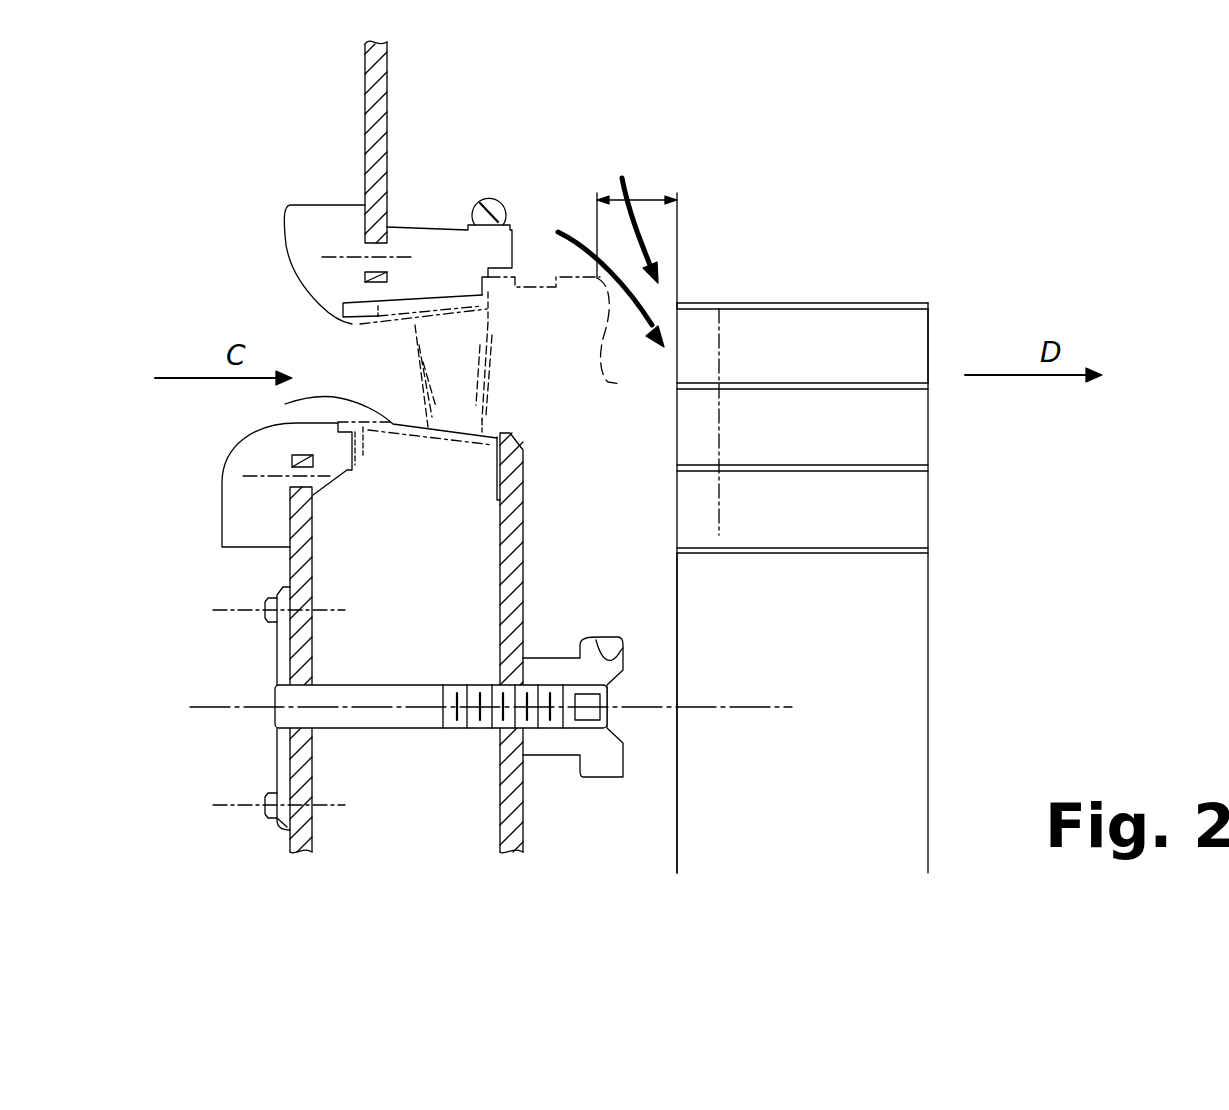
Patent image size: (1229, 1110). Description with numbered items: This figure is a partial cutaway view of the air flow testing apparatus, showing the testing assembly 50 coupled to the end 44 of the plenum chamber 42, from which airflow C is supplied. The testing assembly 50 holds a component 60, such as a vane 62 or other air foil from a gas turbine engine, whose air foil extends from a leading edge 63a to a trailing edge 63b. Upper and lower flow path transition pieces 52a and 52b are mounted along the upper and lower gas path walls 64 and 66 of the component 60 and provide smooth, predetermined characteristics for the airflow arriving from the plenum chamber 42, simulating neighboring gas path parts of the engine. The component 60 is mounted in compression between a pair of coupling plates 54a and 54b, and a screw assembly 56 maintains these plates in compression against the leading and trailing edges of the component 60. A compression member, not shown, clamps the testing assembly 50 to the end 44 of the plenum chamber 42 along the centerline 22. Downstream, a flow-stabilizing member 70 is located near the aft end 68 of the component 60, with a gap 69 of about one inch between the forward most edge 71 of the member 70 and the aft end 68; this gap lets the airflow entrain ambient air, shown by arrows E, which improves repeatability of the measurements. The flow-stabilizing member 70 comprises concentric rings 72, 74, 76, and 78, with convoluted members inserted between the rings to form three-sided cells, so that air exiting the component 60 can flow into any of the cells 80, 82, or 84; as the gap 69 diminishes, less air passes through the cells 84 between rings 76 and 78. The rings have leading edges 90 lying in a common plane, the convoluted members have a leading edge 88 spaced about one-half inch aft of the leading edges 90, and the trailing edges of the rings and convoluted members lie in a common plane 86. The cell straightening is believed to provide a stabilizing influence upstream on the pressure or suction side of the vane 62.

The centerline 22 is at (768, 707).
The plenum chamber 42 is at (115, 292).
The end of chamber 44 is at (388, 93).
The testing assembly 50 is at (422, 225).
The upper flow path transition piece 52a is at (287, 258).
The lower flow path transition piece 52b is at (222, 510).
The coupling plate 54a is at (313, 540).
The coupling plate 54b is at (500, 523).
The screw assembly 56 is at (598, 650).
The component 60 is at (543, 277).
The vane 62 is at (465, 407).
The leading edge 63a is at (418, 345).
The trailing edge 63b is at (488, 348).
The upper gas path wall 64 is at (393, 323).
The lower gas path wall 66 is at (290, 403).
The aft end 68 is at (620, 384).
The gap 69 is at (637, 200).
The flow-stabilizing member 70 is at (812, 300).
The forward most edge 71 is at (677, 303).
The concentric ring 72 is at (928, 303).
The concentric ring 74 is at (928, 386).
The concentric ring 76 is at (928, 468).
The concentric ring 78 is at (928, 551).
The cells 80 is at (868, 359).
The cells 82 is at (868, 441).
The cells 84 is at (868, 524).
The common plane 86 is at (928, 340).
The leading edge of convoluted members 88 is at (717, 535).
The leading edges of rings 90 is at (677, 553).